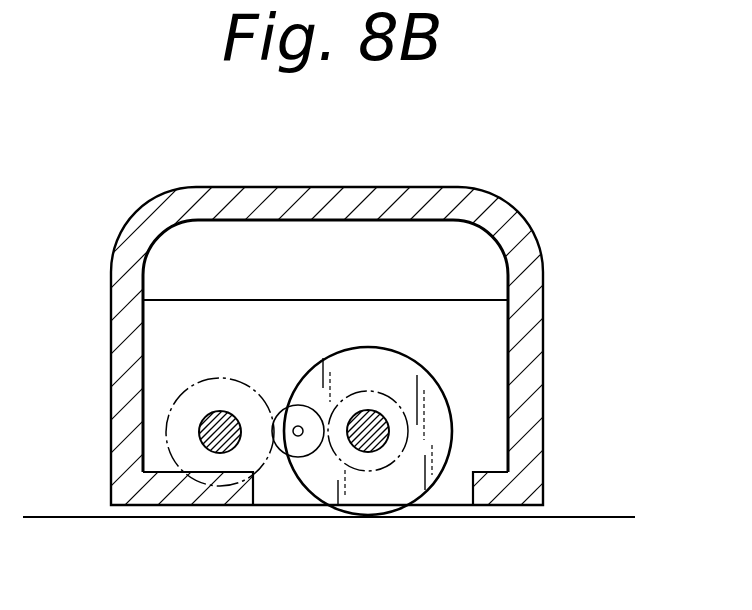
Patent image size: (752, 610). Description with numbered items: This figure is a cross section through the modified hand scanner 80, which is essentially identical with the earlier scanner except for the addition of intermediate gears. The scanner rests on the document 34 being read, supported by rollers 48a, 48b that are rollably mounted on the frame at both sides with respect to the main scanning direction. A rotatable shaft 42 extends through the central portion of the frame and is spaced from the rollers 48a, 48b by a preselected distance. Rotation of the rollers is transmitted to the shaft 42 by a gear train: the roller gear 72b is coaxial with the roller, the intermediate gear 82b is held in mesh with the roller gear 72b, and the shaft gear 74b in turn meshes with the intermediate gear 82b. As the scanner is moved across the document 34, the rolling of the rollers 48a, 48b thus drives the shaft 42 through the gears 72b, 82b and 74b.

The hand scanner 80 is at (550, 226).
The shaft gear 74b is at (166, 437).
The rotatable shaft 42 is at (215, 445).
The intermediate gear 82b is at (308, 457).
The roller gear 72b is at (400, 462).
The roller 48a is at (484, 427).
The roller 48b is at (453, 417).
The document 34 is at (613, 518).